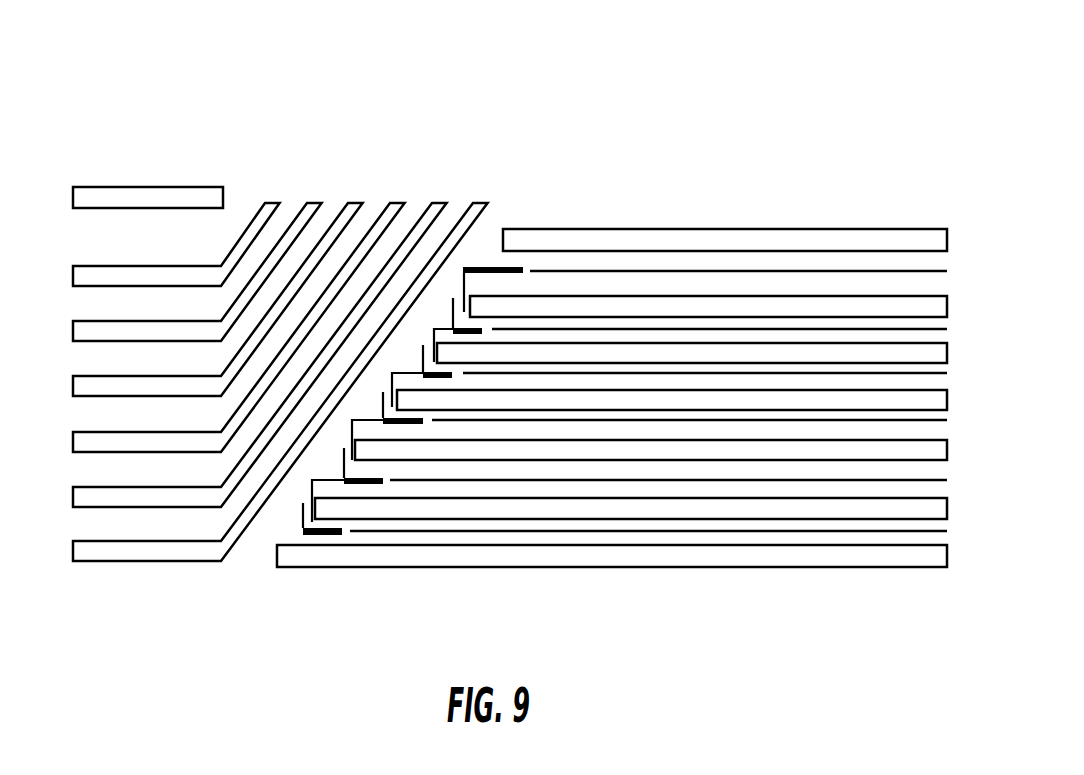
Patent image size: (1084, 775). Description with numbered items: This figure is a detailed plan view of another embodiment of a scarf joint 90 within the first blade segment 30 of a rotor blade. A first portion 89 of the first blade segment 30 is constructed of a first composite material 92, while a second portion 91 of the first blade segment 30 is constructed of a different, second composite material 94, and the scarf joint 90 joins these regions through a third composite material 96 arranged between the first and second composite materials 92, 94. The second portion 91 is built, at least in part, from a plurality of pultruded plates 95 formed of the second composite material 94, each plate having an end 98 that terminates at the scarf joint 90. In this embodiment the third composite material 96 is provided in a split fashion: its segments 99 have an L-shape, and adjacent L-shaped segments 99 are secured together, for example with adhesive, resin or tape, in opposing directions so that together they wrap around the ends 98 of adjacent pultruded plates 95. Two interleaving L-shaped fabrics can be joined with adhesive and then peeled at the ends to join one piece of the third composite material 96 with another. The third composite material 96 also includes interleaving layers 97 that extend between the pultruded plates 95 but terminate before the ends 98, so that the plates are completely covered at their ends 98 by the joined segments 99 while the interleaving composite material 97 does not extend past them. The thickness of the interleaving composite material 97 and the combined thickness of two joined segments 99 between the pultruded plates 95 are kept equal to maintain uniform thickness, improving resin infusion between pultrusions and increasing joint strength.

The first blade segment 30 is at (884, 86).
The first portion 89 is at (186, 166).
The scarf joint 90 is at (506, 188).
The second portion 91 is at (612, 391).
The first composite material 92 is at (120, 282).
The second composite material 94 is at (853, 512).
The pultruded plates 95 is at (610, 298).
The third composite material 96 is at (332, 545).
The interleaving composite material layers 97 is at (767, 328).
The ends 98 is at (365, 450).
The L-shaped segments 99 is at (453, 312).